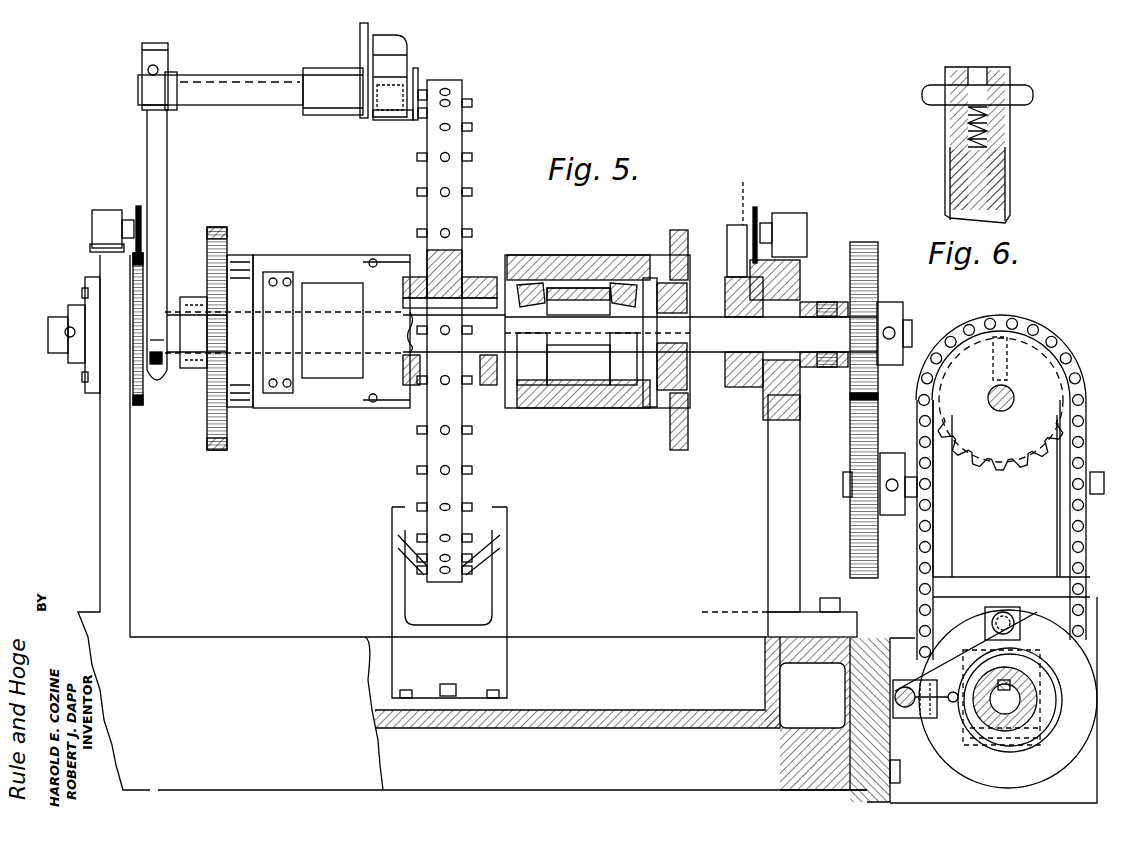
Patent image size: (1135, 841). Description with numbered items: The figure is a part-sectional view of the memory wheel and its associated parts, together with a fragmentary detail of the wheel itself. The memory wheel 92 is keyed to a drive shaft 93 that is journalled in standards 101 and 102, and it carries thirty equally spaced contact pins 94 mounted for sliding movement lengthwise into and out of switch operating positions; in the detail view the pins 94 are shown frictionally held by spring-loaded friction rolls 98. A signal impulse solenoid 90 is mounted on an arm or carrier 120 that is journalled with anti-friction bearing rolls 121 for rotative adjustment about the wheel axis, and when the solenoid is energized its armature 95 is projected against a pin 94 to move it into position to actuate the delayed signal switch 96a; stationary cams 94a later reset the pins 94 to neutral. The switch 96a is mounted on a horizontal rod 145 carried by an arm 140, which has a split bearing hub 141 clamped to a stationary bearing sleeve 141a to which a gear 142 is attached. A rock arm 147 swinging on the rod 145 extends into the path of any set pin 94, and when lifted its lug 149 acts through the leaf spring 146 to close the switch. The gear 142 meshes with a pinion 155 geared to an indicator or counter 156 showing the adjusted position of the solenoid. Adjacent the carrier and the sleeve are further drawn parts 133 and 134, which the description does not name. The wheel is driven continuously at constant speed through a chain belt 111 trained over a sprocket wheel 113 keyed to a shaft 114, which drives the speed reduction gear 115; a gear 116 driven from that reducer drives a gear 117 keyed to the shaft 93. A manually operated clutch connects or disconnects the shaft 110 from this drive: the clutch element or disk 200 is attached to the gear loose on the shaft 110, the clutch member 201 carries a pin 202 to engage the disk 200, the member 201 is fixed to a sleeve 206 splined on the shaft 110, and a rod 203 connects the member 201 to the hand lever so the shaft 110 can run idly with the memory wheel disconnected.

In FIG. 5, the signal impulse solenoid 90 is at (322, 297).
In FIG. 5, the memory wheel 92 is at (455, 173).
In FIG. 6, the memory wheel 92 is at (1010, 124).
In FIG. 5, the drive shaft 93 is at (915, 327).
In FIG. 5, the contact pin 94 is at (470, 122).
In FIG. 6, the contact pin 94 is at (1017, 97).
In FIG. 5, the stationary cam 94a is at (490, 520).
In FIG. 5, the armature 95 is at (454, 317).
In FIG. 5, the delayed signal switch 96a is at (397, 60).
In FIG. 6, the spring-loaded friction roll 98 is at (965, 117).
In FIG. 5, the standard 101 is at (122, 517).
In FIG. 5, the standard 102 is at (770, 495).
In FIG. 5, the shaft 110 is at (1000, 697).
In FIG. 5, the chain belt 111 is at (920, 580).
In FIG. 5, the sprocket wheel 113 is at (1003, 470).
In FIG. 5, the shaft 114 is at (1003, 405).
In FIG. 5, the speed reduction gear 115 is at (1018, 498).
In FIG. 5, the gear 116 is at (858, 548).
In FIG. 5, the gear 117 is at (878, 292).
In FIG. 5, the arm or carrier 120 is at (261, 262).
In FIG. 5, the anti-friction bearing roll 121 is at (530, 283).
In FIG. 5, the gear 133 is at (218, 440).
In FIG. 5, the gear 134 is at (218, 228).
In FIG. 5, the arm 140 is at (160, 142).
In FIG. 5, the split bearing hub 141 is at (158, 378).
In FIG. 5, the stationary bearing sleeve 141a is at (715, 292).
In FIG. 5, the gear 142 is at (143, 405).
In FIG. 5, the horizontal rod 145 is at (256, 87).
In FIG. 5, the leaf spring 146 is at (365, 118).
In FIG. 5, the rock arm 147 is at (418, 73).
In FIG. 5, the lug 149 is at (395, 119).
In FIG. 5, the pinion 155 is at (136, 212).
In FIG. 5, the indicator or counter 156 is at (100, 220).
In FIG. 5, the clutch element or disk 200 is at (1060, 752).
In FIG. 5, the clutch member 201 is at (982, 644).
In FIG. 5, the pin 202 is at (1005, 620).
In FIG. 5, the rod 203 is at (905, 680).
In FIG. 5, the sleeve 206 is at (1000, 717).